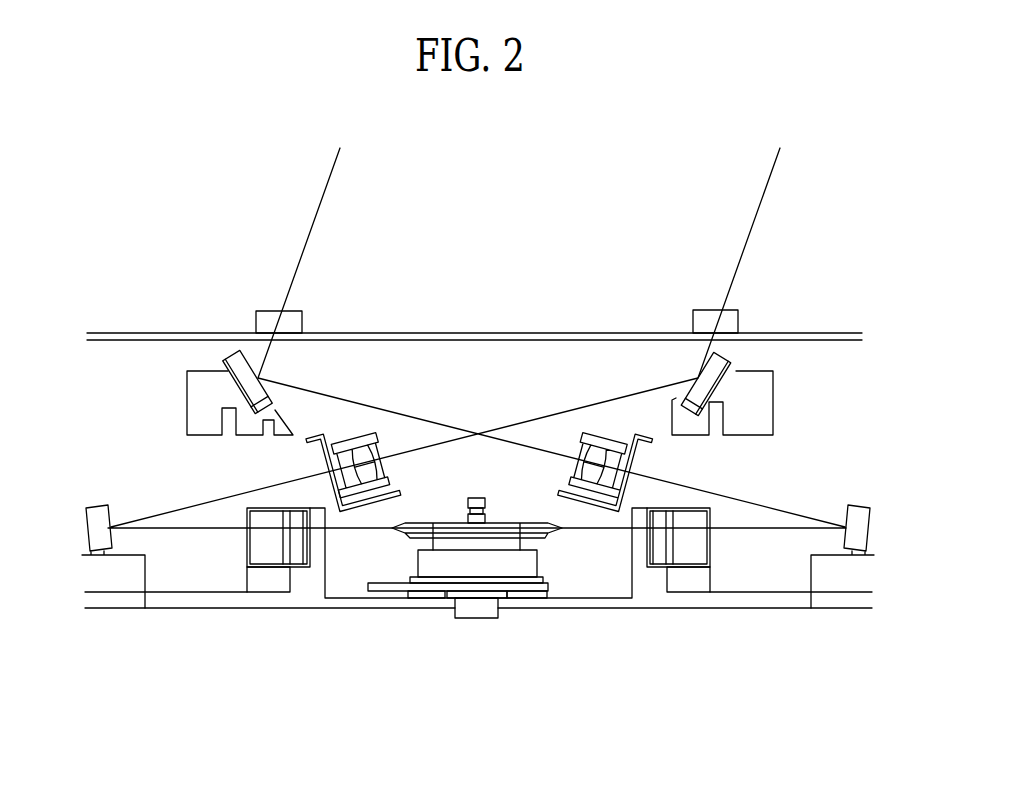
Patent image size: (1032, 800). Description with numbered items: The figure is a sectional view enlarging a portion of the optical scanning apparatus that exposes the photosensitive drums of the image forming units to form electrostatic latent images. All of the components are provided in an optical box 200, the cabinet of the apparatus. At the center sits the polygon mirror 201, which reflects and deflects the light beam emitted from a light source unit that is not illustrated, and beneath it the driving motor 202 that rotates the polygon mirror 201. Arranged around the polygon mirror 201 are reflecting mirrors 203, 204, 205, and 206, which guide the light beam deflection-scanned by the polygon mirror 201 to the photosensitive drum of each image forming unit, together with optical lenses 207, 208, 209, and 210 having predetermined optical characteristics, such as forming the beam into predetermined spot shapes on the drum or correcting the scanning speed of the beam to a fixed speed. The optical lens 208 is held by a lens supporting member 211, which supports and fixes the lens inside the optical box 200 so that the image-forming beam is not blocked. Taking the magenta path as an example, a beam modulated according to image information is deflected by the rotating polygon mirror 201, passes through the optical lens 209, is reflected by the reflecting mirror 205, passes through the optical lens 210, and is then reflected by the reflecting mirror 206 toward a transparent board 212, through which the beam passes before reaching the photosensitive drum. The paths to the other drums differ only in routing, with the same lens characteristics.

The optical box 200 is at (592, 600).
The polygon mirror 201 is at (418, 534).
The driving motor 202 is at (440, 567).
The reflecting mirror 203 is at (93, 507).
The reflecting mirror 204 is at (693, 383).
The reflecting mirror 205 is at (850, 553).
The reflecting mirror 206 is at (233, 353).
The optical lens 207 is at (263, 550).
The optical lens 208 is at (365, 450).
The optical lens 209 is at (690, 547).
The optical lens 210 is at (594, 447).
The lens supporting member 211 is at (360, 512).
The transparent board 212 is at (293, 322).